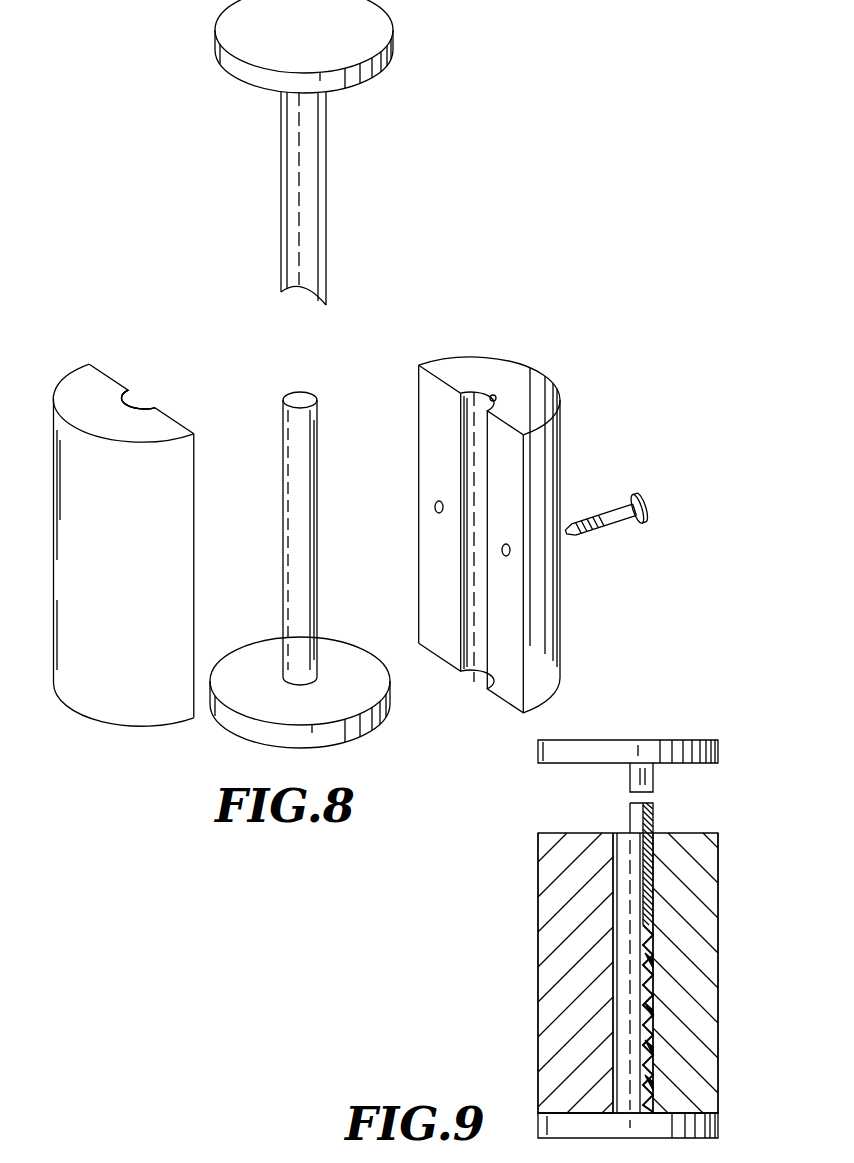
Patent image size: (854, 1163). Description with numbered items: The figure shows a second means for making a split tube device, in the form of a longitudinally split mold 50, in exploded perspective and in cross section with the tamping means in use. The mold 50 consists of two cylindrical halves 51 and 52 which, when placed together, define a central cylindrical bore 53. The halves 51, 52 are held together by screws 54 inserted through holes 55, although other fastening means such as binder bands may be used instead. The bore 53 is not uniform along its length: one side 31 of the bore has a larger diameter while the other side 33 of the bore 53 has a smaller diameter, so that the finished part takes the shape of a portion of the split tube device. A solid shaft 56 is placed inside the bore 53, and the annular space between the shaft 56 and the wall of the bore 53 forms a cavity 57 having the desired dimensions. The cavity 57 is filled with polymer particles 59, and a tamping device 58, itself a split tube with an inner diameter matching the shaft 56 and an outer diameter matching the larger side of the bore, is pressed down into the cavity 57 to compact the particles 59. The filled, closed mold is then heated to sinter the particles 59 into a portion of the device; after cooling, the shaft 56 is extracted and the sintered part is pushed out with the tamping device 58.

In FIG. 8, the one side of the bore 31 is at (497, 395).
In FIG. 8, the other side of the bore 33 is at (135, 403).
In FIG. 8, the longitudinally split mold 50 is at (528, 312).
In FIG. 9, the longitudinally split mold 50 is at (530, 871).
In FIG. 8, the cylindrical half 51 is at (553, 617).
In FIG. 9, the cylindrical half 51 is at (718, 1033).
In FIG. 8, the cylindrical half 52 is at (112, 698).
In FIG. 9, the cylindrical half 52 is at (538, 1032).
In FIG. 8, the central cylindrical bore 53 is at (143, 404).
In FIG. 9, the central cylindrical bore 53 is at (618, 842).
In FIG. 8, the screw 54 is at (606, 530).
In FIG. 8, the hole 55 is at (502, 551).
In FIG. 8, the shaft 56 is at (316, 461).
In FIG. 9, the shaft 56 is at (622, 1071).
In FIG. 9, the cavity 57 is at (652, 1012).
In FIG. 8, the tamping device 58 is at (328, 148).
In FIG. 9, the tamping device 58 is at (655, 806).
In FIG. 9, the polymer particles 59 is at (650, 985).